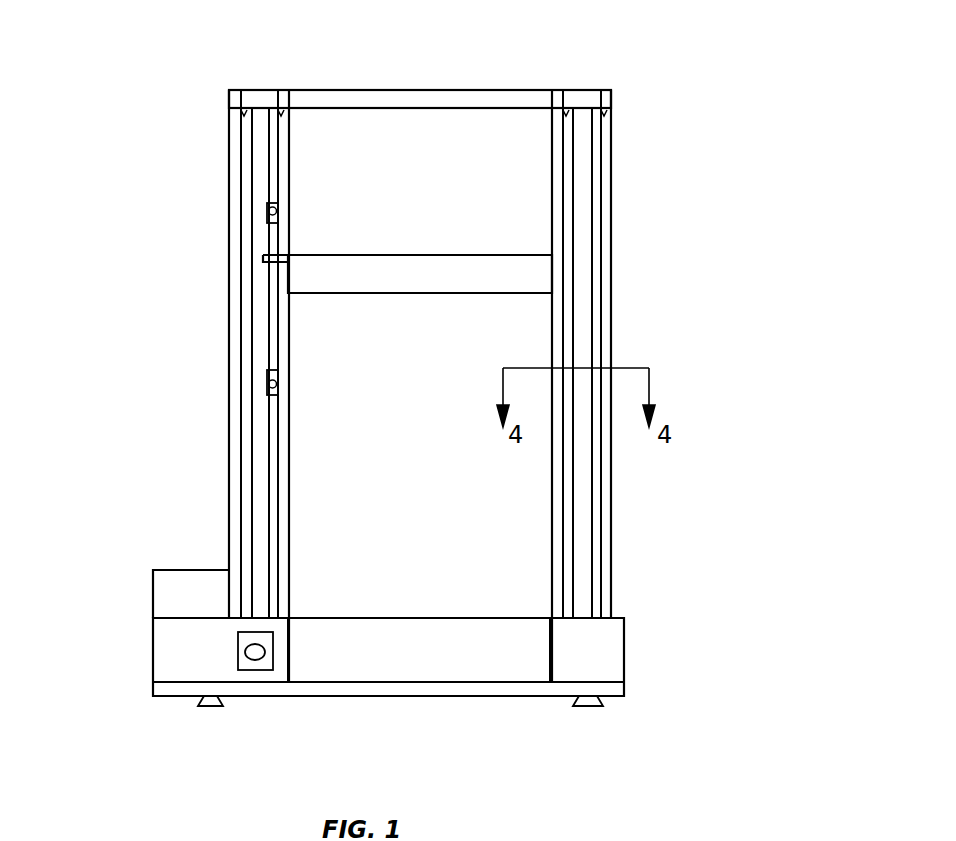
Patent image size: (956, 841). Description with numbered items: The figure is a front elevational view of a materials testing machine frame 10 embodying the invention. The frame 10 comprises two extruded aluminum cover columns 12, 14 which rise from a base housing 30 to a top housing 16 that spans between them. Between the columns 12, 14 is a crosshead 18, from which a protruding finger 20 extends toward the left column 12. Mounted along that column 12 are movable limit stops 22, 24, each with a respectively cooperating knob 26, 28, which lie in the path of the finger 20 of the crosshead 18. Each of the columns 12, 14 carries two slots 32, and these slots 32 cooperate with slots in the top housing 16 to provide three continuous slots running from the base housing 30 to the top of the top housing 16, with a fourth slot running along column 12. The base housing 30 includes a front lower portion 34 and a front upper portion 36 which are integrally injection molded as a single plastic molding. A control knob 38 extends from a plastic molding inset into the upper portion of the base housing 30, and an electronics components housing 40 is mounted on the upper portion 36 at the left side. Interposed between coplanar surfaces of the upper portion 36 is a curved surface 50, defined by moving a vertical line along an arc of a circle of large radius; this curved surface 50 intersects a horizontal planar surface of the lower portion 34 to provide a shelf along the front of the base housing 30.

The materials testing machine frame 10 is at (728, 647).
The cover column 12 is at (233, 280).
The cover column 14 is at (607, 243).
The top housing 16 is at (443, 97).
The crosshead 18 is at (430, 268).
The protruding finger 20 is at (270, 266).
The movable limit stop 22 is at (266, 203).
The movable limit stop 24 is at (267, 397).
The knob 26 is at (268, 212).
The knob 28 is at (266, 384).
The base housing 30 is at (130, 658).
The slots 32 is at (280, 116).
The front lower portion 34 is at (482, 688).
The front upper portion 36 is at (187, 672).
The control knob 38 is at (257, 660).
The electronics components housing 40 is at (162, 585).
The curved surface 50 is at (385, 662).